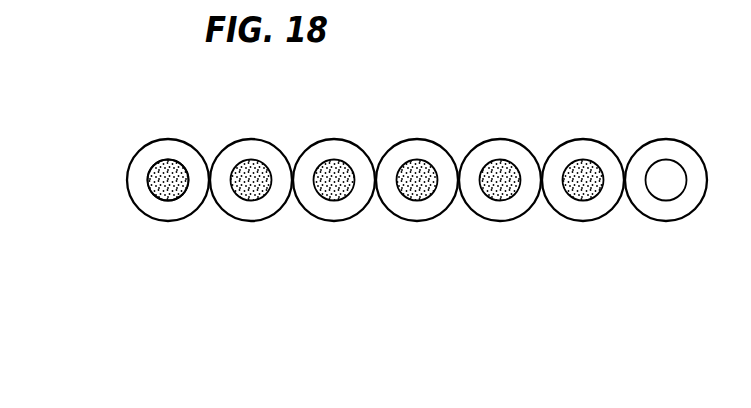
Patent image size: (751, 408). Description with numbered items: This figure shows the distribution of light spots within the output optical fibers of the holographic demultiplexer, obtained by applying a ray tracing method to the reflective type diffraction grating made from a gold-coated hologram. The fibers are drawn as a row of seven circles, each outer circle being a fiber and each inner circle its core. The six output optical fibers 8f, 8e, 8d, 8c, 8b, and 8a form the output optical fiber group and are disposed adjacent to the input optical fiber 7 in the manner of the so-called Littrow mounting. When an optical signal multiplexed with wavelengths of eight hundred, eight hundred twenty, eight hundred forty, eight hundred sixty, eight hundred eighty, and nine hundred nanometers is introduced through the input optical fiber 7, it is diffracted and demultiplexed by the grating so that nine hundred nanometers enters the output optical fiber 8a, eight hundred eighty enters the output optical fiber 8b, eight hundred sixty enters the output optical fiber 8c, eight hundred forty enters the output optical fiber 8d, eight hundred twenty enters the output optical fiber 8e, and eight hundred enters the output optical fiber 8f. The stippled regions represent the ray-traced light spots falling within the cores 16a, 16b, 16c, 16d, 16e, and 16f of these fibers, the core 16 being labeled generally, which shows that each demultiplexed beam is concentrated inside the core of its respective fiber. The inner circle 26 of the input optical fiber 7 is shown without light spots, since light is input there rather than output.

The input optical fiber 7 is at (666, 146).
The output optical fiber 8a is at (583, 146).
The output optical fiber 8b is at (500, 146).
The output optical fiber 8c is at (417, 146).
The output optical fiber 8d is at (335, 146).
The output optical fiber 8e is at (253, 146).
The output optical fiber 8f is at (170, 146).
The core 16 is at (160, 187).
The core 16a is at (583, 200).
The core 16b is at (502, 200).
The core 16c is at (417, 200).
The core 16d is at (335, 200).
The core 16e is at (251, 200).
The core 16f is at (168, 200).
The aperture of reference light source 26 is at (665, 182).